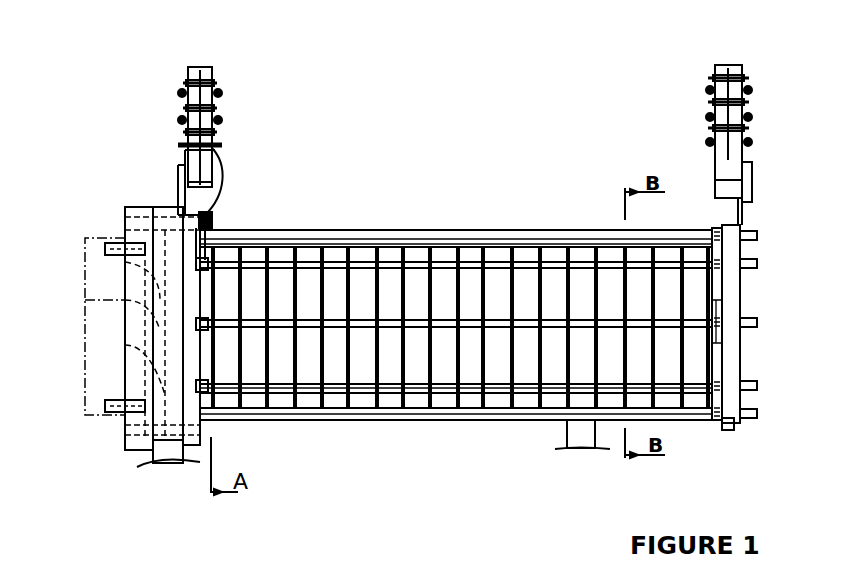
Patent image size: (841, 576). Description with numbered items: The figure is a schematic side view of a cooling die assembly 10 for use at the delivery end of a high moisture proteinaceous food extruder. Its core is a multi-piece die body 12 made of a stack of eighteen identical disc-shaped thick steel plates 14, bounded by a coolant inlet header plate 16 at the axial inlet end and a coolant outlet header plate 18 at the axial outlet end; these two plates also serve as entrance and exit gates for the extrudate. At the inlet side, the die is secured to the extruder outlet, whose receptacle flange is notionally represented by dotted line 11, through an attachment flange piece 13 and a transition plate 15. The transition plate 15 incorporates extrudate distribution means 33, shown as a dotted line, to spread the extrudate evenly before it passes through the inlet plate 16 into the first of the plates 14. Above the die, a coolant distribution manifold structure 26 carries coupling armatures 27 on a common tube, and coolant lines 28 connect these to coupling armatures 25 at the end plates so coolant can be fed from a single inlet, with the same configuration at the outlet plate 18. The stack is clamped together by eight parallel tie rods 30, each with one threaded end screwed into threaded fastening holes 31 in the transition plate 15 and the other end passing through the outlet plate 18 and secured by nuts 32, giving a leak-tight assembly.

The cooling die assembly 10 is at (498, 223).
The receptacle flange at the extruder outlet 11 is at (105, 418).
The die body 12 is at (396, 369).
The attachment flange piece 13 is at (132, 445).
The disc-shaped thick steel plates 14 is at (552, 398).
The transition plate 15 is at (173, 290).
The coolant inlet header plate 16 is at (198, 360).
The coolant outlet header plate 18 is at (735, 365).
The coupling armatures 25 is at (205, 220).
The coolant distribution manifold structure 26 is at (202, 68).
The coupling armatures 27 is at (218, 145).
The coolant lines 28 is at (225, 173).
The tie rods 30 is at (410, 415).
The threaded fastening holes 31 is at (163, 418).
The nuts 32 is at (740, 420).
The extrudate distribution means 33 is at (148, 277).